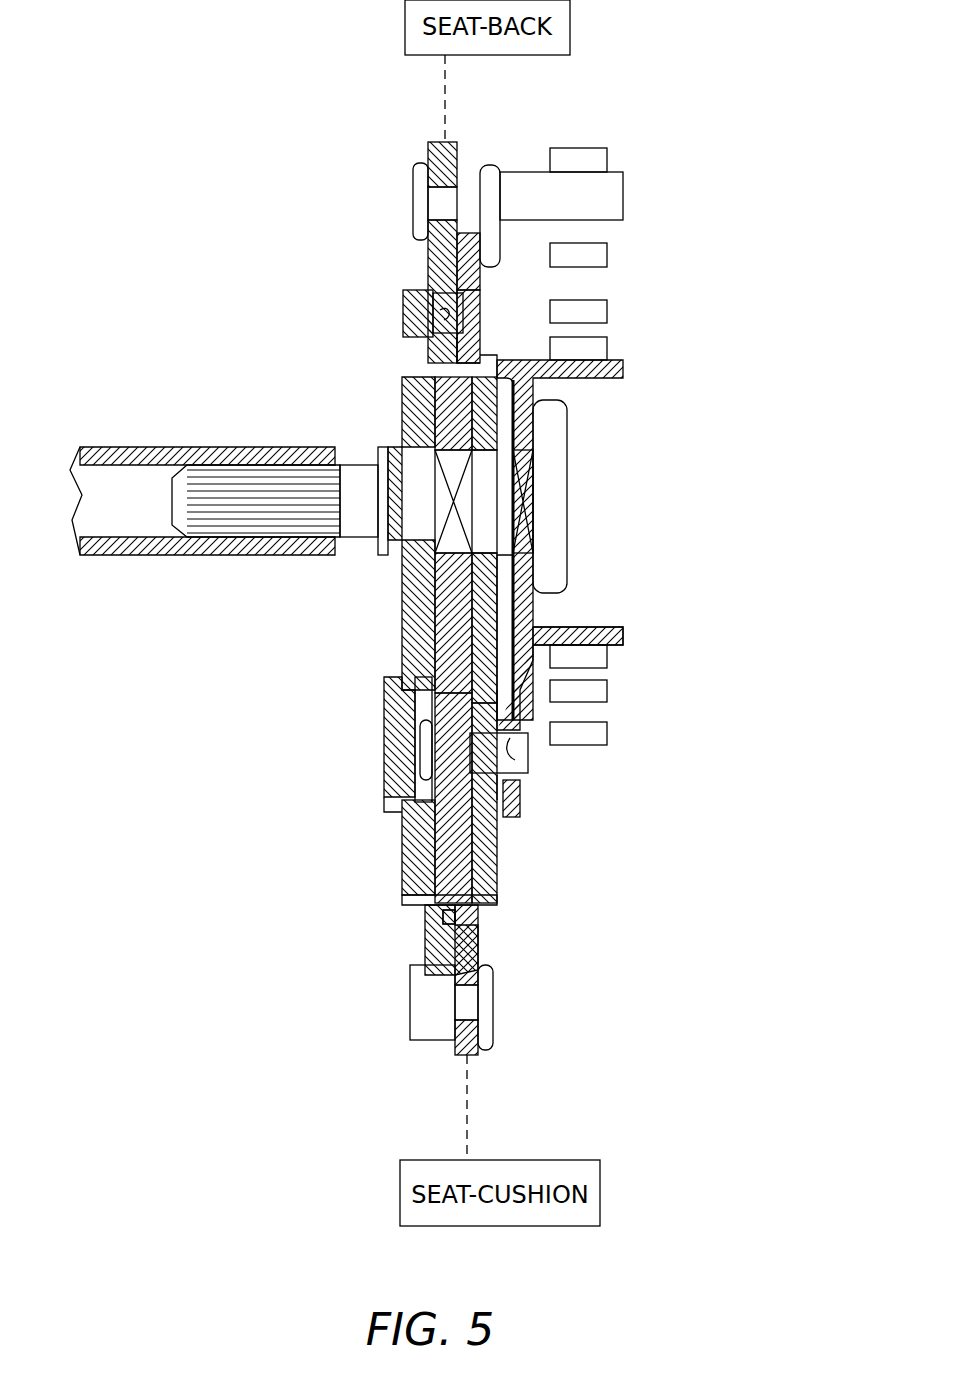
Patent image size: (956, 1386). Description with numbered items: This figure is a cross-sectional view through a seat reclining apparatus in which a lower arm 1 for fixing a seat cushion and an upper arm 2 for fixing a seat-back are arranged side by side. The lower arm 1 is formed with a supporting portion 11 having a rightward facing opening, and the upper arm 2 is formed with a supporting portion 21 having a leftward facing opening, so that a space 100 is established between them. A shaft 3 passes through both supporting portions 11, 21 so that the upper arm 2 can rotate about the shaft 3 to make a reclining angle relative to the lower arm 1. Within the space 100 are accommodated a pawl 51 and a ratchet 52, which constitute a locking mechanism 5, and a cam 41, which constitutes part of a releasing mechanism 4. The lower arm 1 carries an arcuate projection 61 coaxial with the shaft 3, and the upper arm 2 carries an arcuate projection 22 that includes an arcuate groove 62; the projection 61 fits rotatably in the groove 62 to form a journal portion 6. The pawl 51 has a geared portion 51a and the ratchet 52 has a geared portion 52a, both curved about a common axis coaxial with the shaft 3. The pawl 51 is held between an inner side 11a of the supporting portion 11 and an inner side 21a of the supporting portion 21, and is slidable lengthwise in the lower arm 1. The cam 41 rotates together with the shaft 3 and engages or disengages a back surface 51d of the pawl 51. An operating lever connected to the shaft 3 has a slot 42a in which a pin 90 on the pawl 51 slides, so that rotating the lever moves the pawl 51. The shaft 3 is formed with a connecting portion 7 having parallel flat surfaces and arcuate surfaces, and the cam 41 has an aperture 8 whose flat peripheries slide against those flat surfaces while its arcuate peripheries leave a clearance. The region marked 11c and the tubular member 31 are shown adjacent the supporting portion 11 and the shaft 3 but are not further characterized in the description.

The lower arm 1 is at (482, 1068).
The upper arm 2 is at (428, 150).
The shaft 3 is at (352, 460).
The releasing mechanism 4 is at (530, 810).
The locking mechanism 5 is at (395, 968).
The journal portion 6 is at (410, 350).
The connecting portion 7 is at (463, 500).
The aperture 8 is at (470, 545).
The supporting portion 11 is at (482, 595).
The inner side 11a is at (470, 845).
The plate upper portion 11c is at (462, 374).
The supporting portion 21 is at (420, 622).
The inner side 21a is at (432, 825).
The arcuate projection 22 is at (468, 337).
The shaft tube 31 is at (125, 558).
The cam 41 is at (445, 575).
The slot 42a is at (525, 742).
The pawl 51 is at (445, 848).
The geared portion 51a is at (440, 918).
The back surface 51d is at (425, 690).
The ratchet 52 is at (430, 935).
The geared portion 52a is at (445, 918).
The arcuate projection 61 is at (440, 280).
The arcuate groove 62 is at (435, 300).
The pin 90 is at (518, 766).
The space 100 is at (525, 410).